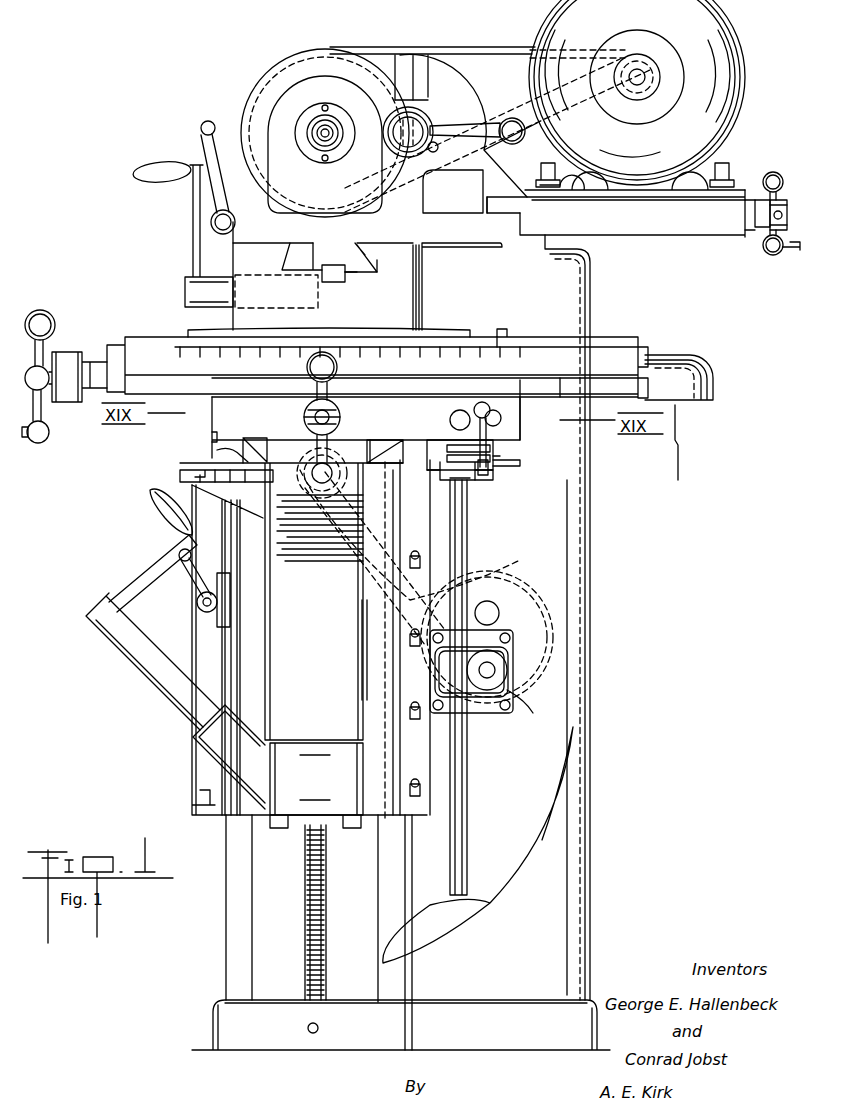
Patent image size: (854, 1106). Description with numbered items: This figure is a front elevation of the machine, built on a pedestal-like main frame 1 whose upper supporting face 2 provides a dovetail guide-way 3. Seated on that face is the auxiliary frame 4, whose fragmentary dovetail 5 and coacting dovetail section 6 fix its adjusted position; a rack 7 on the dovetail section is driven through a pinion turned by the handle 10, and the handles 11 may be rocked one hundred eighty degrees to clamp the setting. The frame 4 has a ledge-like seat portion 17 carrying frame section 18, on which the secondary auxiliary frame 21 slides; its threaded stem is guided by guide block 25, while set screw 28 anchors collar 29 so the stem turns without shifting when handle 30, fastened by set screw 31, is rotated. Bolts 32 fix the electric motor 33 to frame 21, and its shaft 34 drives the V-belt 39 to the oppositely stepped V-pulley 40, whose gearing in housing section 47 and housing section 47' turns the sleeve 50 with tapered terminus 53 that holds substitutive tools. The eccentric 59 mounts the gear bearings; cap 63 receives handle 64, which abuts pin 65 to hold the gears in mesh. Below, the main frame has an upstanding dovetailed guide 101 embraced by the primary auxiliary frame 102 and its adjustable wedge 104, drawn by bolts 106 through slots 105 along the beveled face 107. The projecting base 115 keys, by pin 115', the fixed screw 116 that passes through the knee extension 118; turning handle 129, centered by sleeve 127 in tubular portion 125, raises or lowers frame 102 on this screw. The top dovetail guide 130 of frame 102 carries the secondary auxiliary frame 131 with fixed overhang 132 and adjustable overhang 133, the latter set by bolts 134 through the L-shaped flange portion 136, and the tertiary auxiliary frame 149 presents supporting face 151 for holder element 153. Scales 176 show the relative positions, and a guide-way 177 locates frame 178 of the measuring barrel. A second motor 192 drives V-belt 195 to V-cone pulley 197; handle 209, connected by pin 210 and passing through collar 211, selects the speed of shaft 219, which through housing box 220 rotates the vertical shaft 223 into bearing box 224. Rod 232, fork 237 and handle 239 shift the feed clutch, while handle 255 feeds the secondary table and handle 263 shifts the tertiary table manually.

The main frame 1 is at (588, 737).
The supporting face 2 is at (412, 258).
The dovetail guide-way 3 is at (355, 272).
The auxiliary frame 4 is at (242, 235).
The fragmentary dovetail 5 is at (358, 246).
The dovetail section 6 is at (285, 258).
The rack 7 is at (333, 266).
The handle 10 is at (192, 225).
The handles 11 is at (200, 128).
The seat portion 17 is at (522, 218).
The frame section 18 is at (635, 233).
The secondary auxiliary frame 21 is at (757, 190).
The guide block 25 is at (752, 237).
The set screw 28 is at (755, 212).
The collar 29 is at (755, 222).
The handle 30 is at (775, 255).
The set screw 31 is at (777, 206).
The bolts 32 is at (538, 170).
The electric motor 33 is at (745, 92).
The shaft 34 is at (648, 72).
The V-belt 39 is at (422, 47).
The stepped V-pulley 40 is at (268, 70).
The housing section 47 is at (466, 125).
The housing section 47' is at (325, 112).
The sleeve 50 is at (315, 143).
The taper terminus 53 is at (330, 123).
The eccentric 59 is at (427, 92).
The cap 63 is at (440, 118).
The handle 64 is at (477, 158).
The pin 65 is at (487, 117).
The dovetailed guide 101 is at (265, 910).
The primary auxiliary frame 102 is at (233, 820).
The adjustable wedge 104 is at (377, 547).
The slots 105 is at (380, 653).
The bolts 106 is at (380, 668).
The beveled face 107 is at (400, 757).
The projecting base 115 is at (401, 1006).
The pin 115' is at (312, 1053).
The screw 116 is at (326, 916).
The knee extension 118 is at (318, 730).
The tubular portion 125 is at (192, 740).
The sleeve 127 is at (167, 703).
The handle 129 is at (153, 572).
The dovetail guide 130 is at (400, 428).
The secondary auxiliary frame 131 is at (215, 417).
The fixed overhang 132 is at (230, 453).
The adjustable overhang 133 is at (403, 450).
The bolts 134 is at (493, 452).
The flange portion 136 is at (493, 475).
The tertiary auxiliary frame 149 is at (622, 340).
The supporting face 151 is at (570, 330).
The holder element 153 is at (480, 320).
The scales 176 is at (218, 438).
The guide-way 177 is at (182, 477).
The frame 178 is at (382, 368).
The motor 192 is at (327, 540).
The V-belt 195 is at (478, 540).
The V-cone pulley 197 is at (480, 555).
The handle 209 is at (195, 572).
The pin 210 is at (198, 608).
The collar 211 is at (227, 627).
The shaft 219 is at (572, 740).
The housing box 220 is at (513, 648).
The vertically-extending shaft 223 is at (467, 827).
The bearing box 224 is at (495, 463).
The rod 232 is at (498, 415).
The fork 237 is at (495, 458).
The handle 239 is at (495, 433).
The handle 255 is at (362, 327).
The handle 263 is at (54, 327).